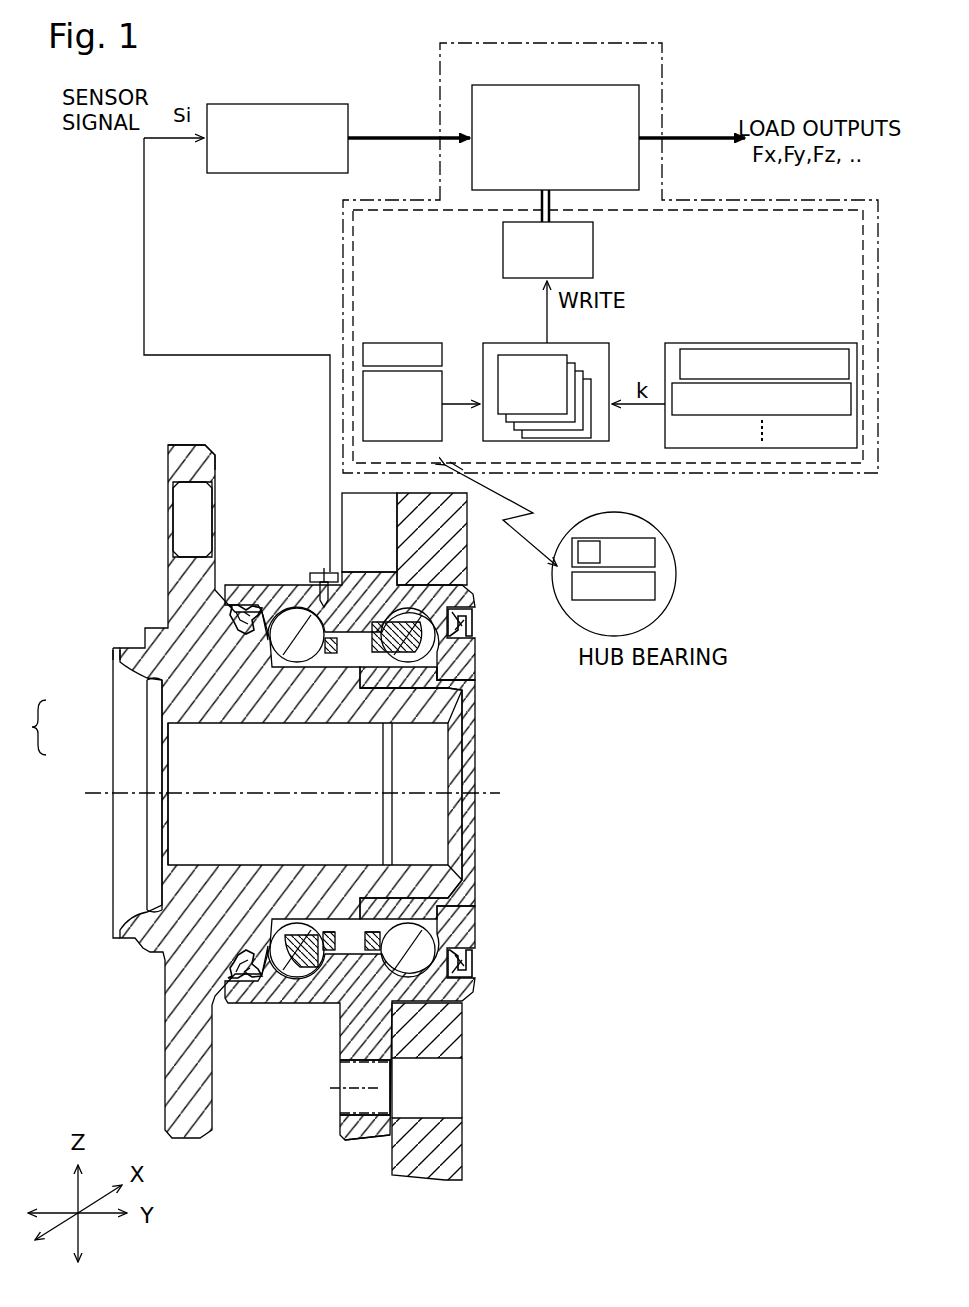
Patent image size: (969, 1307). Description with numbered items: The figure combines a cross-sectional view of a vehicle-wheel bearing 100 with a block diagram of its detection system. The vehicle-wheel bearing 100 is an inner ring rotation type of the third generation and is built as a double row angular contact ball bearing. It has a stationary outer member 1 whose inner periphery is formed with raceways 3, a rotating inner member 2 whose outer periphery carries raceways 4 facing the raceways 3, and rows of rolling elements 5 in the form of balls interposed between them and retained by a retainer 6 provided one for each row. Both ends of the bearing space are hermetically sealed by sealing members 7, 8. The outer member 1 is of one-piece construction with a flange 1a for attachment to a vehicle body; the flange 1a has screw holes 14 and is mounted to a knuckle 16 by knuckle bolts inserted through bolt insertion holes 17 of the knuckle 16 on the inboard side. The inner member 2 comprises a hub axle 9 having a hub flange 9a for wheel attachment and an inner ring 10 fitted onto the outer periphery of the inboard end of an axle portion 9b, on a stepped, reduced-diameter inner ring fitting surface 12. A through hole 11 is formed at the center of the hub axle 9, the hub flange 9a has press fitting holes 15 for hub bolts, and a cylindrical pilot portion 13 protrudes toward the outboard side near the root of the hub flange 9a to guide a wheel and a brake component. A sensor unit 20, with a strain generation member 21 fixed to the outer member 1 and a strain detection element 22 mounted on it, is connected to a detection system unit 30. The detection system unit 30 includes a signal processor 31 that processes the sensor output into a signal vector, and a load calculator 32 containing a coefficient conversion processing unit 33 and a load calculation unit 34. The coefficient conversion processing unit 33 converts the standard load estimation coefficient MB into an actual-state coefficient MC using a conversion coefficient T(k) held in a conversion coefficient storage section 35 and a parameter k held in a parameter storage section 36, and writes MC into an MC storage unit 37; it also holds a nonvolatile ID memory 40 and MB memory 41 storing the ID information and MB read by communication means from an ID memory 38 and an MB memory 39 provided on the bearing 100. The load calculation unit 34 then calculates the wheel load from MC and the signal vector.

The vehicle-wheel bearing 100 is at (147, 455).
The outer member 1 is at (310, 1007).
The flange 1a is at (365, 1143).
The inner member 2 is at (30, 727).
The raceways 3 is at (275, 918).
The raceways 4 is at (285, 940).
The rolling elements 5 is at (235, 942).
The retainer 6 is at (368, 932).
The sealing member 7 is at (240, 614).
The sealing member 8 is at (480, 628).
The hub axle 9 is at (185, 702).
The hub flange 9a is at (196, 445).
The axle portion 9b is at (470, 712).
The inner ring 10 is at (265, 727).
The through hole 11 is at (230, 860).
The inner ring fitting surface 12 is at (477, 670).
The cylindrical pilot portion 13 is at (118, 655).
The screw holes 14 is at (345, 1100).
The press fitting holes 15 is at (173, 500).
The knuckle 16 is at (425, 1180).
The bolt insertion holes 17 is at (430, 1118).
The sensor unit 20 is at (303, 575).
The strain generation member 21 is at (320, 575).
The strain detection element 22 is at (325, 570).
The detection system unit 30 is at (430, 86).
The signal processor 31 is at (278, 104).
The load calculator 32 is at (630, 43).
The coefficient conversion processing unit 33 is at (420, 210).
The load calculation unit 34 is at (640, 97).
The conversion coefficient storage section 35 is at (600, 343).
The parameter storage section 36 is at (735, 343).
The MC storage unit 37 is at (593, 250).
The ID memory 38 is at (632, 538).
The MB memory 39 is at (588, 600).
The ID memory 40 is at (400, 343).
The MB memory 41 is at (442, 385).